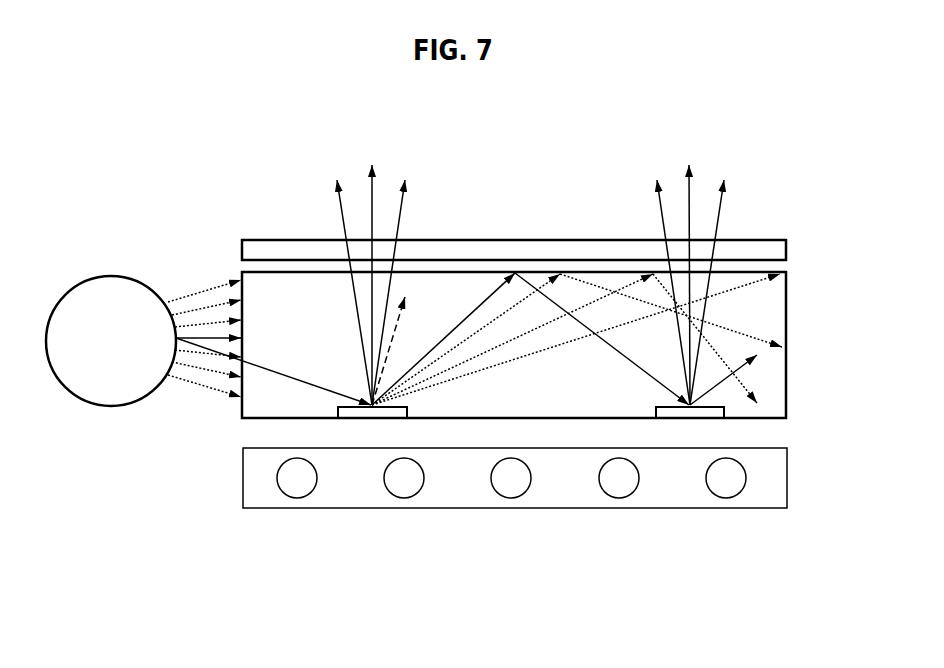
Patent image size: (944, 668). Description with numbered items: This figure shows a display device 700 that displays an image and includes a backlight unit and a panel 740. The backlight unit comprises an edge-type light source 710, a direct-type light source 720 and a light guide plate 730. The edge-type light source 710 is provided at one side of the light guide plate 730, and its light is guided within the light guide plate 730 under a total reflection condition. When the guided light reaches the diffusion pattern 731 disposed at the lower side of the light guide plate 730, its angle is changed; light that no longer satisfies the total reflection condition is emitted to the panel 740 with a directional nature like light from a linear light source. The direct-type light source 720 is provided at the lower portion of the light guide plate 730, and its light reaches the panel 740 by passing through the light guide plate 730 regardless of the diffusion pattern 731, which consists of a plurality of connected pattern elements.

The display device 700 is at (468, 117).
The edge-type light source 710 is at (110, 275).
The direct-type light source 720 is at (355, 508).
The light guide plate 730 is at (787, 320).
The diffusion pattern 731 is at (694, 408).
The panel 740 is at (787, 248).